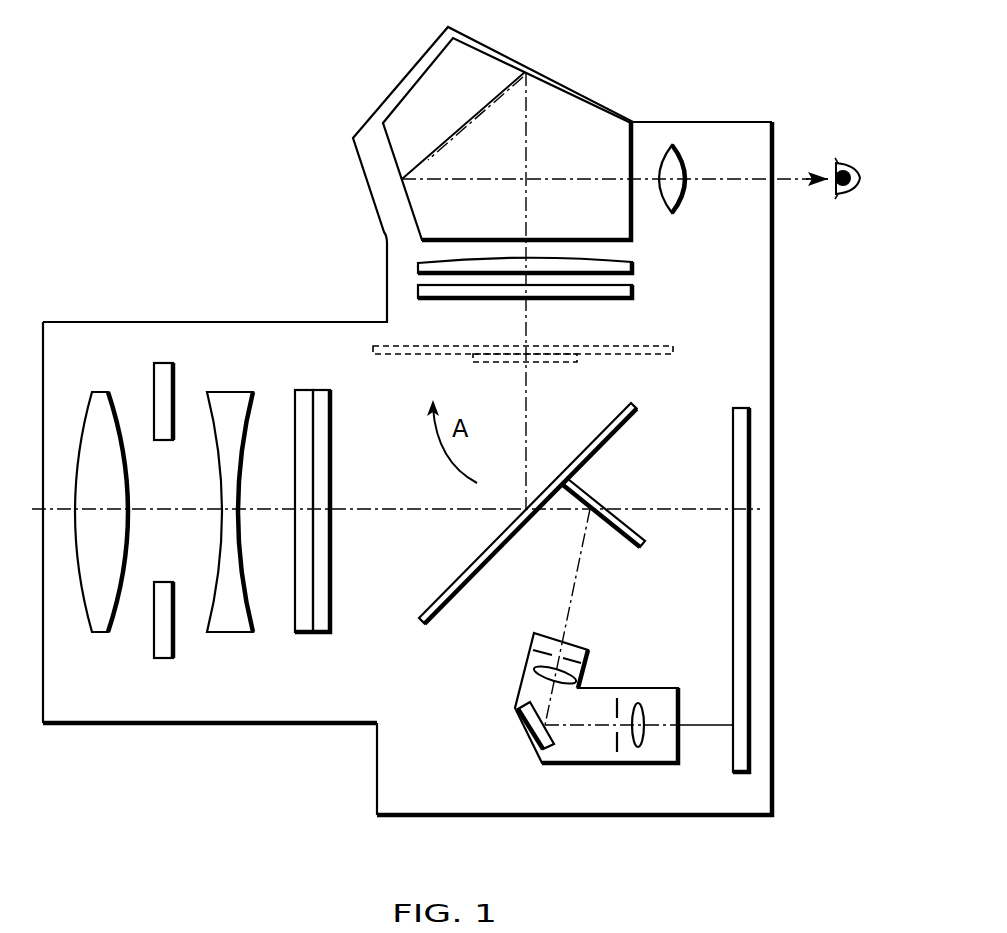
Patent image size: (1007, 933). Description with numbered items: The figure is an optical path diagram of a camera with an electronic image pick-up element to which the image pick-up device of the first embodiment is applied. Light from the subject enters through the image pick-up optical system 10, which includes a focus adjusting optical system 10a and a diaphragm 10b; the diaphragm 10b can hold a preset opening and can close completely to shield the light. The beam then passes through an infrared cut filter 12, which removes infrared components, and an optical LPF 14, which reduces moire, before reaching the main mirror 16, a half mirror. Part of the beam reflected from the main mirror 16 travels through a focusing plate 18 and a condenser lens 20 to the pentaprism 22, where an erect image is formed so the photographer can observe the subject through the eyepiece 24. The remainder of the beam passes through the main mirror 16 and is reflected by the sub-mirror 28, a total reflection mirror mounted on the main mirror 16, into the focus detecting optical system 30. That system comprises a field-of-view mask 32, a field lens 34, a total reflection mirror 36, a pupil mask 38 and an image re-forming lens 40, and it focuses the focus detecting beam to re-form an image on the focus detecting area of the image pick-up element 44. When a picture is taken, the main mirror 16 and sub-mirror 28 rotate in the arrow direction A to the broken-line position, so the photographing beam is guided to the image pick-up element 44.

The image pick-up optical system 10 is at (198, 514).
The focus adjusting optical system 10a is at (100, 392).
The diaphragm 10b is at (163, 363).
The infrared cut filter 12 is at (302, 390).
The optical LPF 14 is at (322, 390).
The main mirror 16 is at (634, 404).
The focusing plate 18 is at (634, 291).
The condenser lens 20 is at (634, 263).
The pentaprism 22 is at (600, 100).
The eyepiece 24 is at (682, 150).
The sub-mirror 28 is at (577, 358).
The focus detecting optical system 30 is at (521, 737).
The field-of-view mask 32 is at (548, 652).
The field lens 34 is at (540, 668).
The total reflection mirror 36 is at (520, 710).
The pupil mask 38 is at (620, 748).
The image re-forming lens 40 is at (640, 703).
The image pick-up element 44 is at (738, 408).